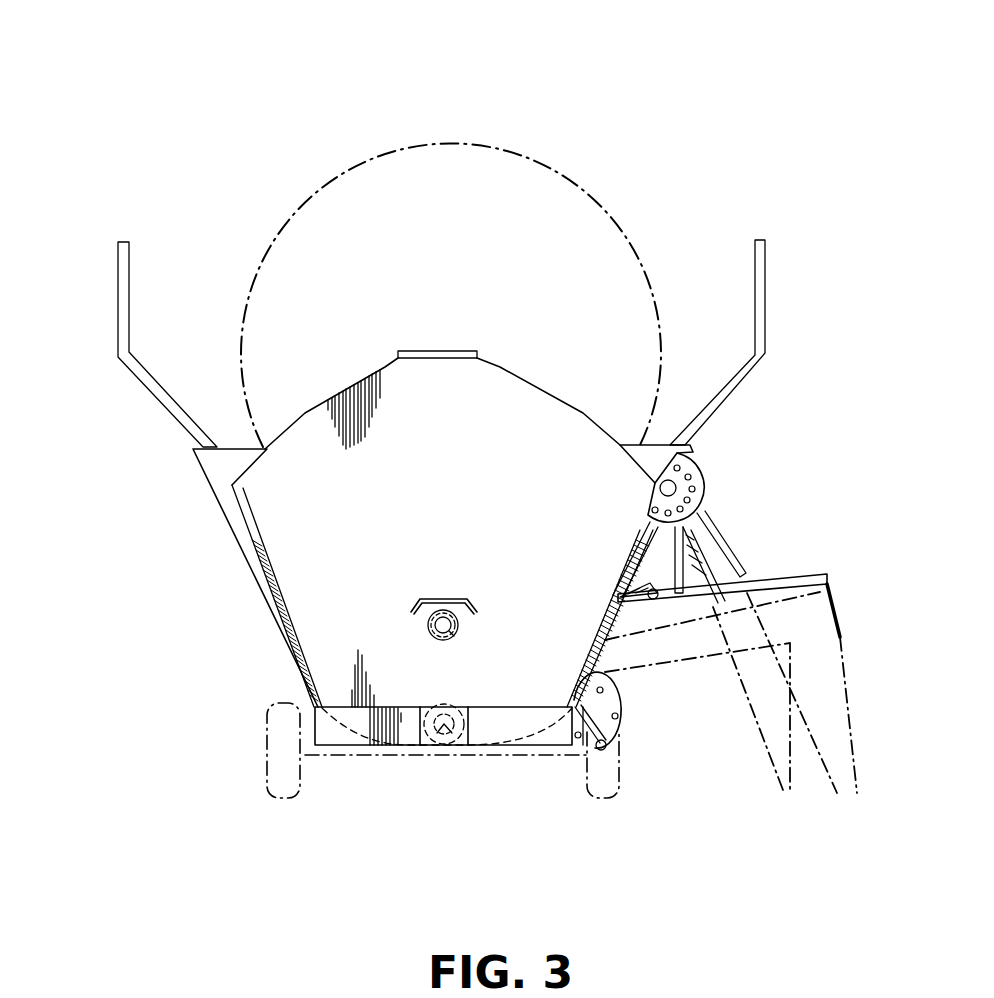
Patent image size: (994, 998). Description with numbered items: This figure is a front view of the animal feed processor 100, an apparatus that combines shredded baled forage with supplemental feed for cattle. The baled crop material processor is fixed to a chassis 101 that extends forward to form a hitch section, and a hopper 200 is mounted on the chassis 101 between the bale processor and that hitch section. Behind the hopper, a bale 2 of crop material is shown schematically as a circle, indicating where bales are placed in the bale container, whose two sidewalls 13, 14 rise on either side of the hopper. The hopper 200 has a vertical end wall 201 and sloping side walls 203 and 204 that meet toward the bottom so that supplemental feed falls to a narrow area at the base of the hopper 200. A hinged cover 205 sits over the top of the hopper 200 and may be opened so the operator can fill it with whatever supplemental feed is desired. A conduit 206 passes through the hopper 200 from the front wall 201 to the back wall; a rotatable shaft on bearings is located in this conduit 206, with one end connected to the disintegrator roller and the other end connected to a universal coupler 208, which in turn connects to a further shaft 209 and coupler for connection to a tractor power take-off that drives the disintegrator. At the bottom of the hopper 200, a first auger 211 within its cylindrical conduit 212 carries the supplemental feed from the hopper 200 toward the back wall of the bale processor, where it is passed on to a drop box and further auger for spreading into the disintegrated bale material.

The bale 2 is at (520, 156).
The animal feed processor 100 is at (718, 188).
The sidewall 13 is at (765, 253).
The sidewall 14 is at (118, 270).
The hopper 200 is at (554, 385).
The vertical end wall 201 is at (360, 338).
The hinged cover 205 is at (447, 350).
The sloping side wall 203 is at (248, 518).
The sloping side wall 204 is at (630, 547).
The universal coupler 208 is at (428, 628).
The conduit 206 is at (460, 621).
The further shaft 209 is at (455, 636).
The chassis 101 is at (550, 737).
The first auger 211 is at (447, 745).
The cylindrical conduit 212 is at (466, 752).